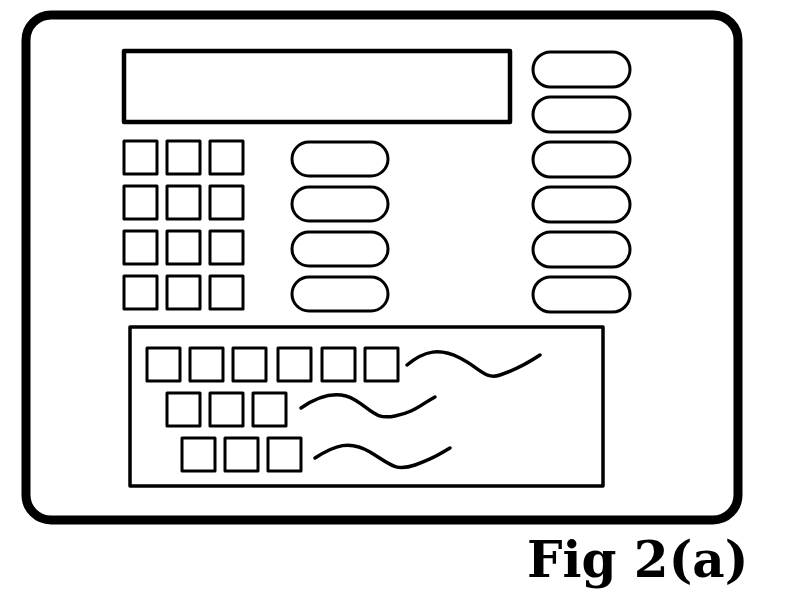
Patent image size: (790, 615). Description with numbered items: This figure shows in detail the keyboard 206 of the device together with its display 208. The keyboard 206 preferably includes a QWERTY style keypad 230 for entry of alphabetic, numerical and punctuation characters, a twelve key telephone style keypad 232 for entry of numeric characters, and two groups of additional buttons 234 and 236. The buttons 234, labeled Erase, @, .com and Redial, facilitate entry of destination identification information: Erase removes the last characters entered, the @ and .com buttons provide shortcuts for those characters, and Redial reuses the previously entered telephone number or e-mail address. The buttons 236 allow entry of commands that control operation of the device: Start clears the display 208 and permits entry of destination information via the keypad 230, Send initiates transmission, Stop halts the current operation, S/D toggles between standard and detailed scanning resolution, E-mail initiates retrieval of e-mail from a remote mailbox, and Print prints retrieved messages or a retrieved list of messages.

The keyboard 206 is at (89, 313).
The display 208 is at (117, 92).
The QWERTY style keypad 230 is at (130, 378).
The 12 key telephone style keypad 232 is at (108, 204).
The buttons 234 is at (417, 231).
The buttons 236 is at (659, 185).